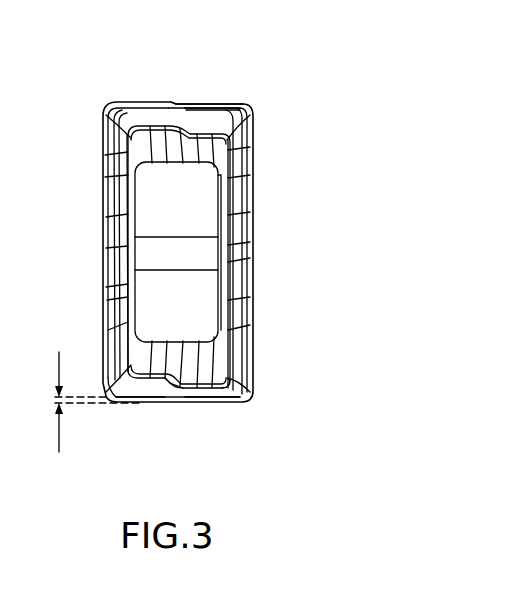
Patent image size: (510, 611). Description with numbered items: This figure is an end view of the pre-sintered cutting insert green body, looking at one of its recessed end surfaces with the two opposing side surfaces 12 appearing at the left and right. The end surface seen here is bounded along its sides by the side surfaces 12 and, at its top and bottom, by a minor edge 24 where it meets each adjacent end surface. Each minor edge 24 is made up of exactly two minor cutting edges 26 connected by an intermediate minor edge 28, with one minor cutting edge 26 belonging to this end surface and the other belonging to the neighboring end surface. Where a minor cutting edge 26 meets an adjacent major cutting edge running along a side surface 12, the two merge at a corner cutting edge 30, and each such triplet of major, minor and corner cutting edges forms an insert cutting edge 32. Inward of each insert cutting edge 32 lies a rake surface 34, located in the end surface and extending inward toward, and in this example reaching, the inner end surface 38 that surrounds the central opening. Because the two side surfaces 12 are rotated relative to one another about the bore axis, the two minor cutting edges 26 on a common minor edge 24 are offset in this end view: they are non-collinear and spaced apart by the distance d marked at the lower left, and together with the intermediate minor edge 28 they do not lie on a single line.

The side surface 12 is at (99, 248).
The minor edge 24 is at (171, 96).
The minor cutting edge 26 is at (140, 403).
The intermediate minor edge 28 is at (178, 102).
The corner cutting edge 30 is at (238, 398).
The insert cutting edge 32 is at (100, 175).
The rake surface 34 is at (125, 133).
The inner end surface 38 is at (200, 203).
The distance d is at (92, 416).